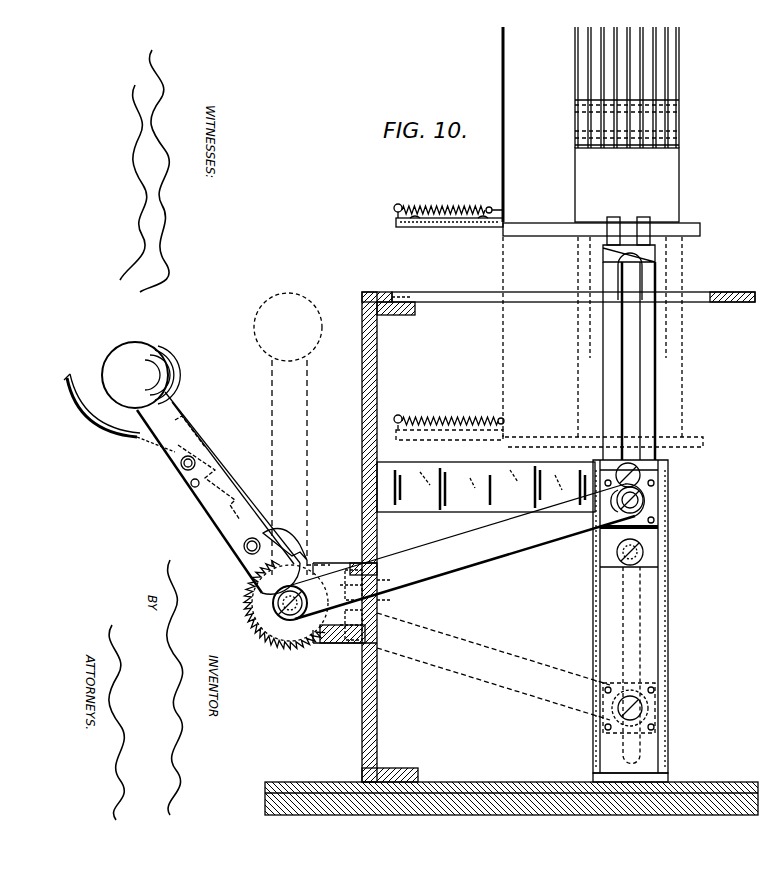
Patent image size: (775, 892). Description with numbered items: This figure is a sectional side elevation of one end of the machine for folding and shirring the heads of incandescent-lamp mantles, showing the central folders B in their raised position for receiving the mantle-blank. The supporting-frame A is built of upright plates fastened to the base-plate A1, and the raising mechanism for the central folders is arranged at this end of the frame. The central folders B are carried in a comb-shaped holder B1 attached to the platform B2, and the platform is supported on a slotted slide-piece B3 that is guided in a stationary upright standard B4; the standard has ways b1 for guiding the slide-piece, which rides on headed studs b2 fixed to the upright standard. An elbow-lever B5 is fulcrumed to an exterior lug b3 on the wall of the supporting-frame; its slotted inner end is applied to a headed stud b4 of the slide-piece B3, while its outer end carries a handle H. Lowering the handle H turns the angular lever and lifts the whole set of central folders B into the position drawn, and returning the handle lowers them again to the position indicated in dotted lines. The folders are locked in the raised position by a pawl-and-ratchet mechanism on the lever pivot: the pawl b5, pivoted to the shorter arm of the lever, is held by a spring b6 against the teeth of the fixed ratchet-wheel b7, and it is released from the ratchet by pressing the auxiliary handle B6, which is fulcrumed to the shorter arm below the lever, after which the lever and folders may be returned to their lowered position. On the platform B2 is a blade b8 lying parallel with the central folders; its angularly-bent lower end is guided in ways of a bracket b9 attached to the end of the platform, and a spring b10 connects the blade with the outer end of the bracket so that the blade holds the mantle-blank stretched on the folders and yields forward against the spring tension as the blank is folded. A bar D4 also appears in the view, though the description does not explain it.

The supporting-frame A is at (464, 537).
The base-plate A1 is at (500, 782).
The central folders B is at (672, 72).
The comb-shaped holder B1 is at (628, 292).
The platform B2 is at (702, 229).
The slotted slide-piece B3 is at (655, 388).
The upright standard B4 is at (650, 656).
The elbow-lever B5 is at (206, 462).
The auxiliary handle B6 is at (119, 418).
The table bar D4 is at (704, 293).
The handle H is at (144, 373).
The ways b1 is at (666, 592).
The headed studs b2 is at (648, 480).
The exterior lug b3 is at (350, 565).
The headed stud b4 is at (656, 500).
The pawl b5 is at (282, 538).
The spring b6 is at (197, 490).
The ratchet-wheel b7 is at (300, 640).
The blade b8 is at (603, 237).
The bracket b9 is at (432, 228).
The spring b10 is at (422, 212).